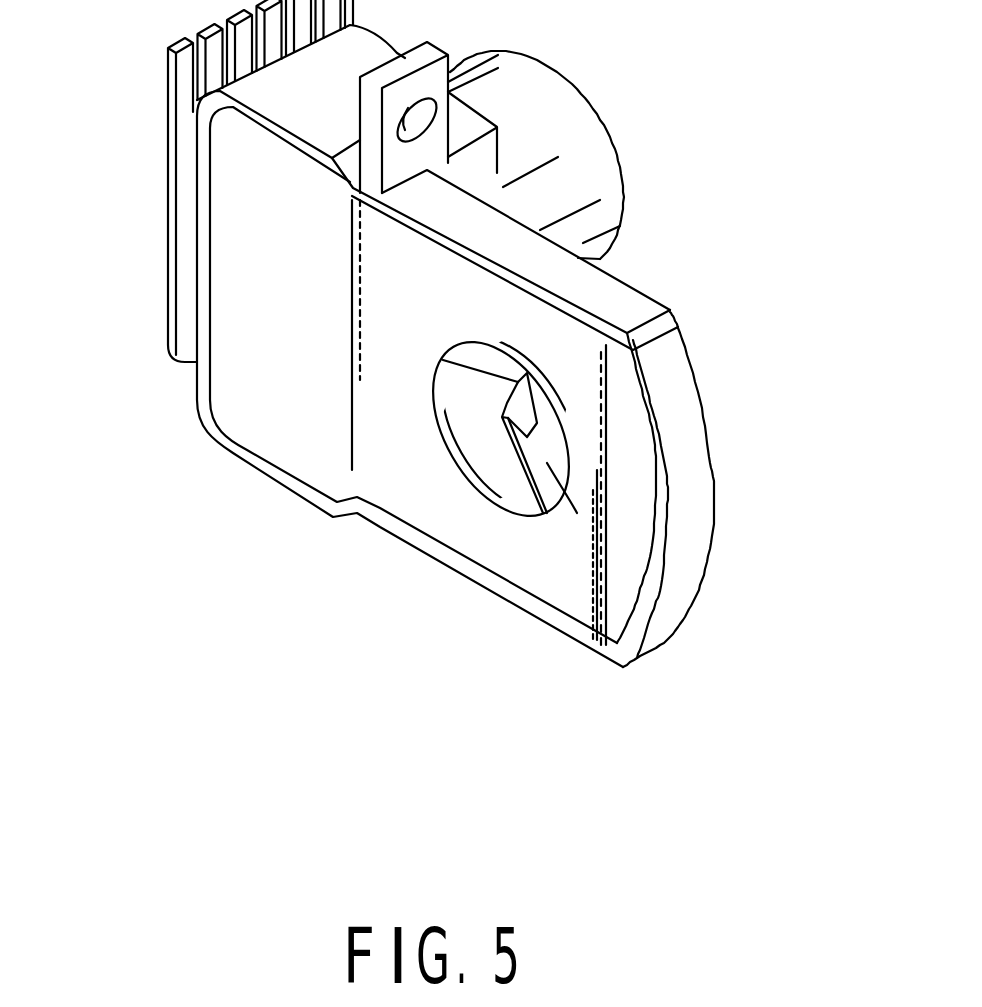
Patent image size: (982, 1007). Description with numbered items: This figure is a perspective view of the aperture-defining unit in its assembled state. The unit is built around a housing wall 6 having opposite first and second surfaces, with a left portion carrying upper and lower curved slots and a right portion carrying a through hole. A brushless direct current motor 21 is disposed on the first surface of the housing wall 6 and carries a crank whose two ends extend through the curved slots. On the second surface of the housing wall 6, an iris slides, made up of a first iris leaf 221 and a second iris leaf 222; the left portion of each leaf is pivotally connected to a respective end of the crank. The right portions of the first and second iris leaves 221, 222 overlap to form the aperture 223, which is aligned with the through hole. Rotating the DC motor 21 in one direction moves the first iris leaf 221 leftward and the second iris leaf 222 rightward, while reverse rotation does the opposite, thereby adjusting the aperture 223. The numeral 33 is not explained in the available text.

The housing wall 6 is at (697, 473).
The brushless direct current motor 21 is at (605, 118).
The first iris leaf 221 is at (527, 403).
The second iris leaf 222 is at (443, 360).
The aperture 223 is at (515, 427).
The shaft 33 is at (565, 510).